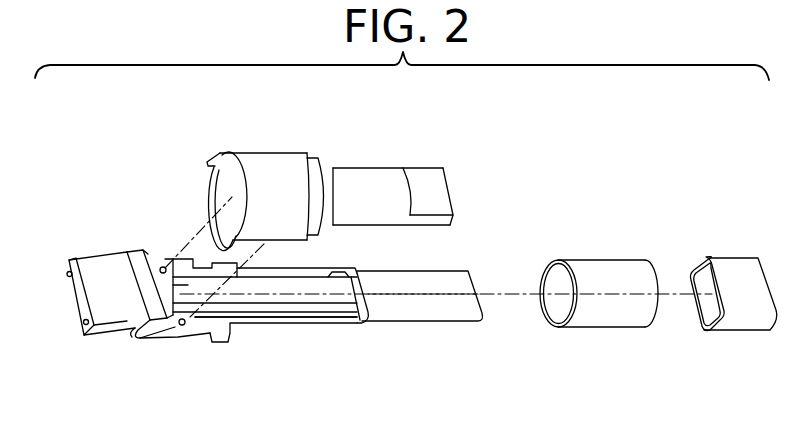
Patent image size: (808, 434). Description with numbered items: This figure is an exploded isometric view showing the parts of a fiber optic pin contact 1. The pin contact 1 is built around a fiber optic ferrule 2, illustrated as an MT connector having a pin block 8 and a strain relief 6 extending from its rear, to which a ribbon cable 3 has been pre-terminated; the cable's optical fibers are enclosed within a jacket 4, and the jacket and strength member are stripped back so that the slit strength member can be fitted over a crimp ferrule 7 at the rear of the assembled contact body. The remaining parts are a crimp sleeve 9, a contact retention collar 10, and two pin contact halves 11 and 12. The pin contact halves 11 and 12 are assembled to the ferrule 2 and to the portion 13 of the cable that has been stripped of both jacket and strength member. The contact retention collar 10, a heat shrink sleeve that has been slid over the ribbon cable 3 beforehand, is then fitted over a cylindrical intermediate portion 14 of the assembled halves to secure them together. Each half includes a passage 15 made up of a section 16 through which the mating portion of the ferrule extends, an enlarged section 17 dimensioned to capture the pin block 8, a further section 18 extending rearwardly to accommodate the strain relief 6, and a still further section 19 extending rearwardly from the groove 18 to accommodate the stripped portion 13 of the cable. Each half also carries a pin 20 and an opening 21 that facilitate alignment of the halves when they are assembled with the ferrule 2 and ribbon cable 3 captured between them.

The fiber optic pin contact 1 is at (515, 202).
The fiber optic ferrule 2 is at (87, 267).
The ribbon cable 3 is at (432, 305).
The jacket 4 is at (447, 278).
The strain relief 6 is at (172, 285).
The crimp ferrule 7 is at (437, 192).
The pin block 8 is at (132, 258).
The crimp sleeve 9 is at (738, 272).
The contact retention collar 10 is at (612, 272).
The pin contact half 11 is at (290, 145).
The pin contact half 12 is at (217, 343).
The stripped portion of the cable 13 is at (302, 285).
The cylindrical intermediate portion 14 is at (367, 188).
The passage 15 is at (262, 318).
The section 16 is at (127, 338).
The enlarged section 17 is at (170, 337).
The further section 18 is at (198, 268).
The still further section 19 is at (330, 277).
The pin 20 is at (183, 327).
The opening 21 is at (162, 267).